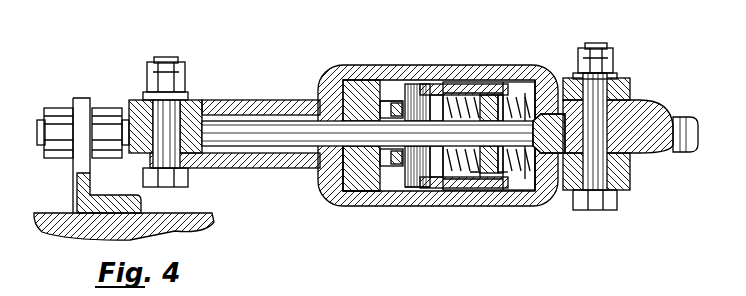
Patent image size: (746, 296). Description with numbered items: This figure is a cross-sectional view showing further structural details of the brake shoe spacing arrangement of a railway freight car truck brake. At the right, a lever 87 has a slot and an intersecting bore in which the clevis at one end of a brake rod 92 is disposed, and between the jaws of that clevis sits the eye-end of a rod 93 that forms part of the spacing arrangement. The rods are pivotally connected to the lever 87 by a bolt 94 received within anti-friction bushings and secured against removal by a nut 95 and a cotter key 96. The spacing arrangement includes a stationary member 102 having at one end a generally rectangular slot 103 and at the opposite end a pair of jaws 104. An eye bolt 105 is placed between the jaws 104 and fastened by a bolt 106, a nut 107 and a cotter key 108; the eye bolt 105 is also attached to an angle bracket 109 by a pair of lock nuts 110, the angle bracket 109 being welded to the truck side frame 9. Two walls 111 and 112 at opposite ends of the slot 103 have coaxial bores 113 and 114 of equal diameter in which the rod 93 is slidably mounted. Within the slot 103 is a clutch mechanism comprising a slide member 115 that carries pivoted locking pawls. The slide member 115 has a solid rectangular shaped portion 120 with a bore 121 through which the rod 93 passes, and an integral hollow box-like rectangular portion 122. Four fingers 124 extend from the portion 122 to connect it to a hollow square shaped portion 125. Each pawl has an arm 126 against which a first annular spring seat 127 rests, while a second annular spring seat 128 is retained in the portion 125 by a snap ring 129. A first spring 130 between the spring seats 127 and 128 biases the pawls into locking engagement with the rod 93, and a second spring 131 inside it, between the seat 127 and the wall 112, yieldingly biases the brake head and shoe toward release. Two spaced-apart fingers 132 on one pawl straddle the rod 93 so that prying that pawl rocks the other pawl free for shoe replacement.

The truck side frame 9 is at (178, 216).
The lever 87 is at (627, 85).
The brake rod 92 is at (682, 117).
The rod 93 is at (547, 88).
The bolt 94 is at (602, 153).
The nut 95 is at (603, 65).
The cotter key 96 is at (605, 45).
The stationary member 102 is at (528, 83).
The slot 103 is at (540, 80).
The jaws 104 is at (231, 100).
The eye bolt 105 is at (134, 117).
The bolt 106 is at (172, 150).
The nut 107 is at (171, 82).
The cotter key 108 is at (163, 60).
The angle bracket 109 is at (76, 197).
The lock nuts 110 is at (104, 110).
The wall 111 is at (328, 120).
The wall 112 is at (548, 192).
The bore 113 is at (343, 93).
The bore 114 is at (542, 153).
The slide member 115 is at (388, 100).
The solid rectangular shaped portion 120 is at (380, 195).
The bore 121 is at (340, 152).
The hollow box-like rectangular portion 122 is at (405, 195).
The fingers 124 is at (448, 97).
The hollow square shaped portion 125 is at (496, 176).
The arm 126 is at (425, 103).
The first annular spring seat 127 is at (442, 172).
The second annular spring seat 128 is at (481, 103).
The snap ring 129 is at (500, 100).
The first spring 130 is at (424, 96).
The second spring 131 is at (482, 180).
The fingers 132 is at (390, 103).